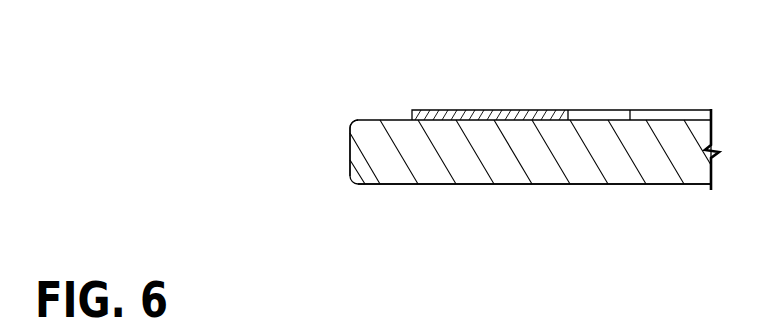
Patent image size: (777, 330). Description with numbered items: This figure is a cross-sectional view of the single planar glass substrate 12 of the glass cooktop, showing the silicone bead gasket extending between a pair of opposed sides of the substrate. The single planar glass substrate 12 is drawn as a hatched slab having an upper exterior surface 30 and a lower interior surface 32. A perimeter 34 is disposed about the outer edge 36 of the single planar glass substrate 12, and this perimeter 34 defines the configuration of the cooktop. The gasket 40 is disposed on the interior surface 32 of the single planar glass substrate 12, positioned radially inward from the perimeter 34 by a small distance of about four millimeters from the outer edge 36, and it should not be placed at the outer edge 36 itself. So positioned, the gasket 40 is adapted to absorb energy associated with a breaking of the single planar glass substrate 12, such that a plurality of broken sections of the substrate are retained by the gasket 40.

The single planar glass substrate 12 is at (595, 160).
The upper exterior surface 30 is at (625, 186).
The lower interior surface 32 is at (655, 117).
The perimeter 34 is at (350, 170).
The outer edge 36 is at (349, 129).
The gasket 40 is at (507, 110).